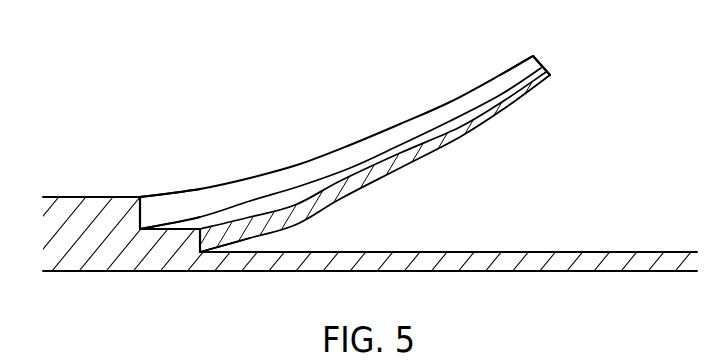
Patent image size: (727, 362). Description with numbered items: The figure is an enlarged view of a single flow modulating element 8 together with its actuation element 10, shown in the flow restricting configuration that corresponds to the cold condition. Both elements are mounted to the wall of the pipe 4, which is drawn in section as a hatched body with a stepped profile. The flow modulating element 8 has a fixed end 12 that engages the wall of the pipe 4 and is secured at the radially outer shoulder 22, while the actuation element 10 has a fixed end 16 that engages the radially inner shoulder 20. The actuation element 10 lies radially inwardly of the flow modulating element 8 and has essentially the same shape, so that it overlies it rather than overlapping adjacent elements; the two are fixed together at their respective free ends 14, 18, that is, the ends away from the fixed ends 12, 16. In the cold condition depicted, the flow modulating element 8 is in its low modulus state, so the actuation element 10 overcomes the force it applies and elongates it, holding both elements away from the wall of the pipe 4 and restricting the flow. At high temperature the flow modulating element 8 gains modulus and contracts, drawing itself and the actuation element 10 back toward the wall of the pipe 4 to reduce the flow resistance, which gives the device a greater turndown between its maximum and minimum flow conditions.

The pipe 4 is at (60, 215).
The flow modulating element 8 is at (413, 165).
The actuation element 10 is at (330, 162).
The fixed end of the flow modulating element 12 is at (224, 237).
The free end of the flow modulating element 14 is at (552, 74).
The fixed end of the actuation element 16 is at (165, 208).
The free end of the actuation element 18 is at (523, 75).
The radially inner shoulder 20 is at (137, 215).
The radially outer shoulder 22 is at (200, 247).